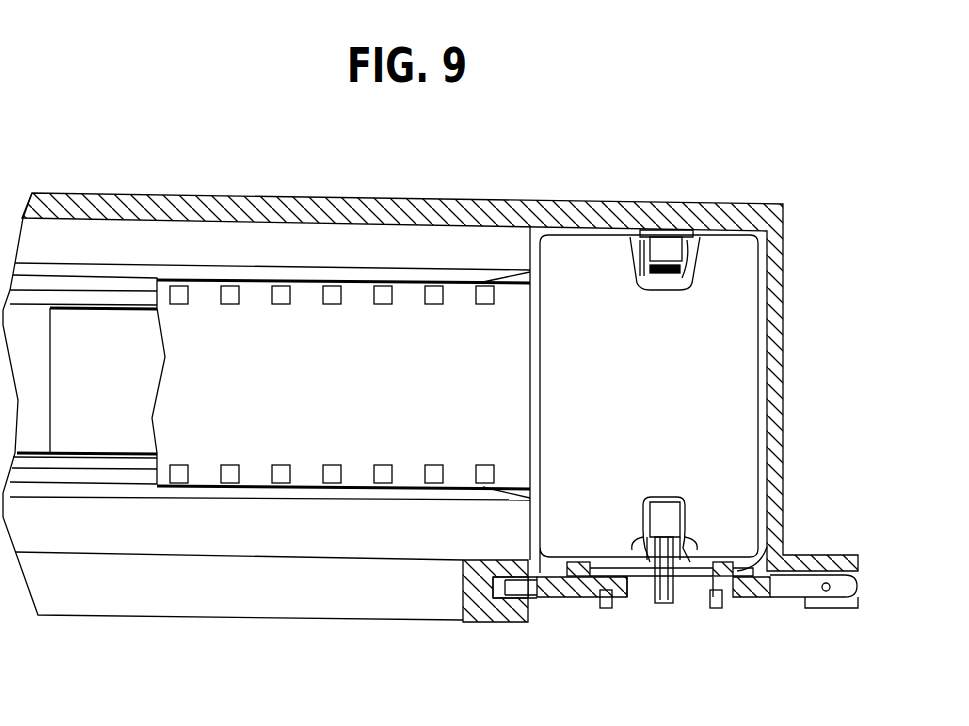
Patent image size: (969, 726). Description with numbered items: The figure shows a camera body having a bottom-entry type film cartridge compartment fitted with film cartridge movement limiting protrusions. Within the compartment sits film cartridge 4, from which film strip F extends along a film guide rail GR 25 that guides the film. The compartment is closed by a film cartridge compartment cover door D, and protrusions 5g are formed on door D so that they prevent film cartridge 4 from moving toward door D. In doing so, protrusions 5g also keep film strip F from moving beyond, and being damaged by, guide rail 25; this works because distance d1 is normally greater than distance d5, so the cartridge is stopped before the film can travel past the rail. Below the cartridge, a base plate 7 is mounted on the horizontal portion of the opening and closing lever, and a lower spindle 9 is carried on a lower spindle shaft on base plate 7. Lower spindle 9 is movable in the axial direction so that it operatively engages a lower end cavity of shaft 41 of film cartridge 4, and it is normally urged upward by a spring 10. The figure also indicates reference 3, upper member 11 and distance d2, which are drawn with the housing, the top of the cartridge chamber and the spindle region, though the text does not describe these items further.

The cartridge housing 3 is at (763, 250).
The film cartridge 4 is at (728, 357).
The film guide rail 25 is at (105, 283).
The film strip F is at (300, 315).
The distance d1 is at (350, 525).
The upper locking member 11 is at (665, 252).
The shaft 41 is at (687, 257).
The lower spindle 9 is at (693, 553).
The spring 10 is at (660, 603).
The base plate 7 is at (637, 600).
The distance d5 is at (578, 590).
The clearance dimension d2 is at (688, 580).
The protrusions 5g is at (552, 580).
The film cartridge compartment cover door D is at (783, 593).